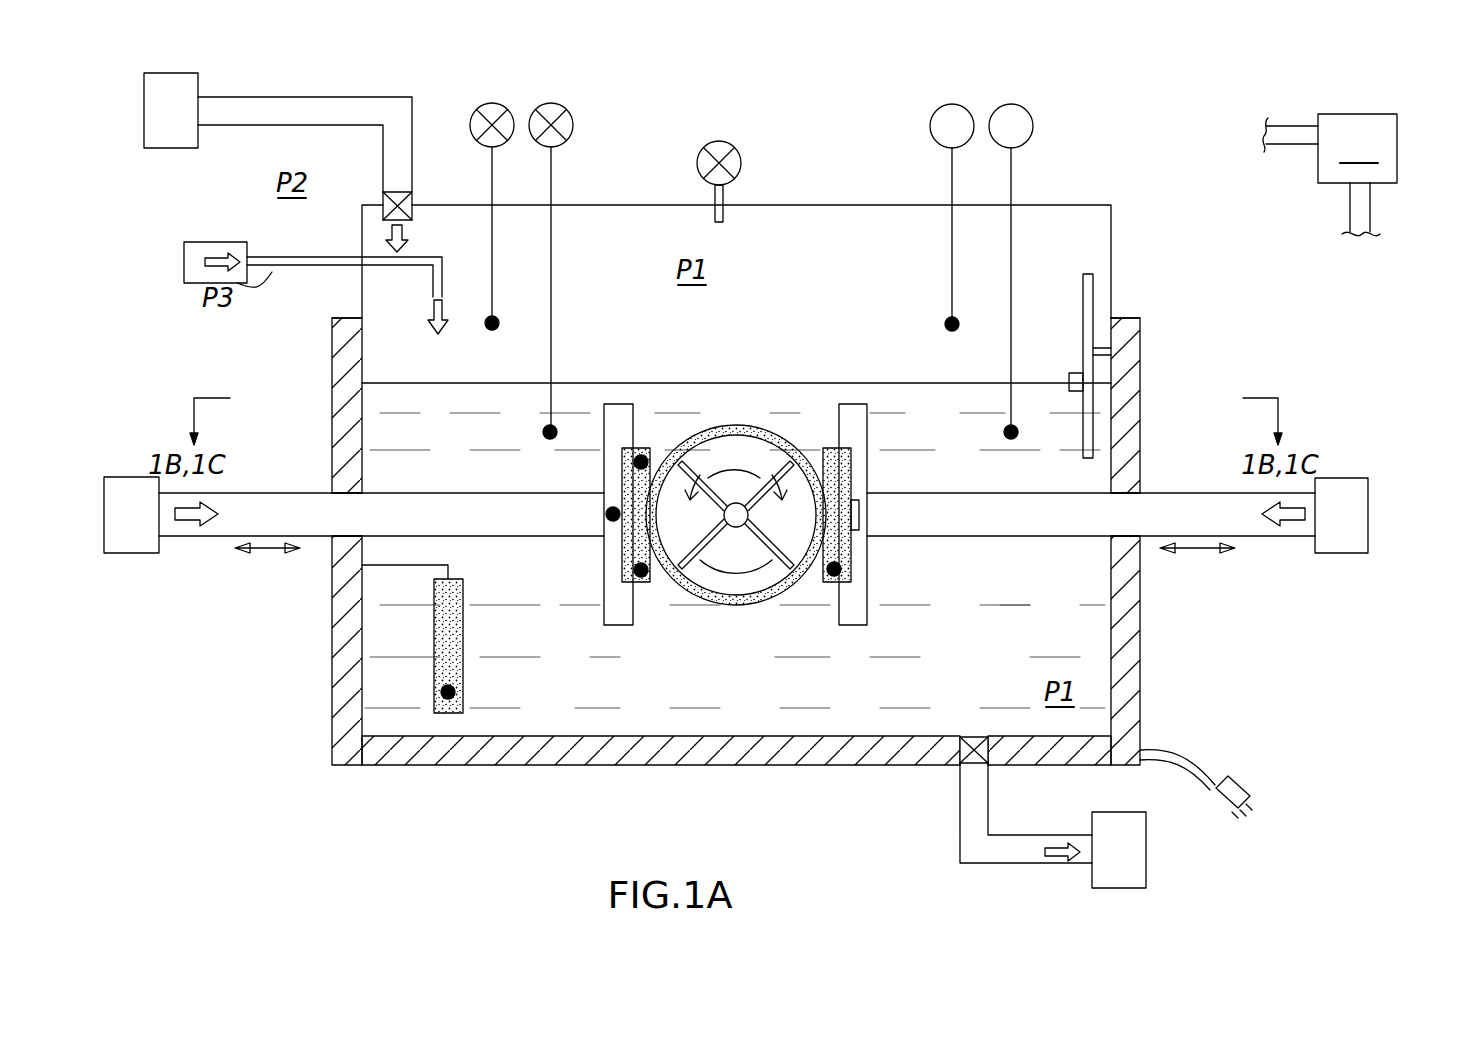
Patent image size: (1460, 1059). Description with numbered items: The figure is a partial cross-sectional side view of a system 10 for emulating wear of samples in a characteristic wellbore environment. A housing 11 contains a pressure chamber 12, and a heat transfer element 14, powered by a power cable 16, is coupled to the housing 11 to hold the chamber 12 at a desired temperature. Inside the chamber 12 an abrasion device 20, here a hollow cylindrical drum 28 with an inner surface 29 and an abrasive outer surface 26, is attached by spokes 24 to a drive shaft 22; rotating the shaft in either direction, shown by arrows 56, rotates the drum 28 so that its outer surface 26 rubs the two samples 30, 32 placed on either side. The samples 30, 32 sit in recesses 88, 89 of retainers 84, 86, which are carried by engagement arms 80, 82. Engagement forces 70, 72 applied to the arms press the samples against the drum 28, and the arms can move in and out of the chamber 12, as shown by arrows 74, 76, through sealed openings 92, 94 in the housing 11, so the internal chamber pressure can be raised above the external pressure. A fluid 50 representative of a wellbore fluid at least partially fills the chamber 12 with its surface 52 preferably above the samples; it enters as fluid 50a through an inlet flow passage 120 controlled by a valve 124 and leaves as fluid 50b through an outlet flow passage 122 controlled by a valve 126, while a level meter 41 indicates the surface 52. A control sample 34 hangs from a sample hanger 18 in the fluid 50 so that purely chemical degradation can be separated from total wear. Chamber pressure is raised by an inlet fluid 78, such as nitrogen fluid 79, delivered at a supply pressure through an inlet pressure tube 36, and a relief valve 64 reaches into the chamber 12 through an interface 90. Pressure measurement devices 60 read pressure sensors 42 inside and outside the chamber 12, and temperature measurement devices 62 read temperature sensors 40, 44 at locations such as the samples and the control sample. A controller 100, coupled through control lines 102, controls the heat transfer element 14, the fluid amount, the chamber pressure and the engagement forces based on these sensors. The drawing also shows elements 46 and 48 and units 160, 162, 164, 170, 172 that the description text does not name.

The system 10 is at (1186, 46).
The housing 11 is at (1111, 243).
The pressure chamber 12 is at (755, 252).
The heat transfer element 14 is at (346, 664).
The power cable 16 is at (1213, 772).
The sample hanger 18 is at (395, 575).
The abrasion device 20 is at (826, 272).
The drive shaft 22 is at (736, 500).
The spokes 24 is at (770, 492).
The outer surface 26 is at (697, 427).
The drum 28 is at (717, 428).
The inner surface 29 is at (746, 438).
The sample 30 is at (638, 462).
The sample 32 is at (850, 455).
The control sample 34 is at (462, 675).
The inlet pressure tube 36 is at (262, 258).
The temperature sensors 40 is at (633, 447).
The level meter 41 is at (1070, 374).
The pressure sensors 42 is at (860, 518).
The temperature sensor 44 is at (448, 692).
The sensor line 46 is at (551, 250).
The temperature probe line 48 is at (1011, 250).
The fluid 50 is at (985, 660).
The fluid 50a is at (408, 244).
The fluid 50b is at (1040, 852).
The surface 52 is at (843, 402).
The arrows 56 is at (702, 580).
The pressure measurement devices 60 is at (540, 103).
The temperature measurement devices 62 is at (1010, 104).
The relief valve 64 is at (728, 140).
The engagement force 70 is at (190, 530).
The engagement force 72 is at (1292, 522).
The arrows 74 is at (272, 550).
The arrows 76 is at (1197, 550).
The inlet fluid 78 is at (218, 257).
The fluid 79 is at (428, 325).
The engagement arm 80 is at (455, 505).
The engagement arm 82 is at (1000, 520).
The retainer 84 is at (622, 612).
The retainer 86 is at (855, 595).
The recess 88 is at (638, 447).
The recess 89 is at (838, 447).
The interface 90 is at (723, 200).
The opening 92 is at (332, 492).
The opening 94 is at (1140, 492).
The controller 100 is at (1357, 148).
The control lines 102 is at (1300, 125).
The inlet flow passage 120 is at (305, 97).
The outlet flow passage 122 is at (1045, 863).
The valve 124 is at (412, 205).
The valve 126 is at (995, 750).
The inlet pump 160 is at (172, 73).
The outlet pump 162 is at (1146, 835).
The gas supply 164 is at (184, 258).
The left drive 170 is at (135, 477).
The right drive 172 is at (1368, 500).